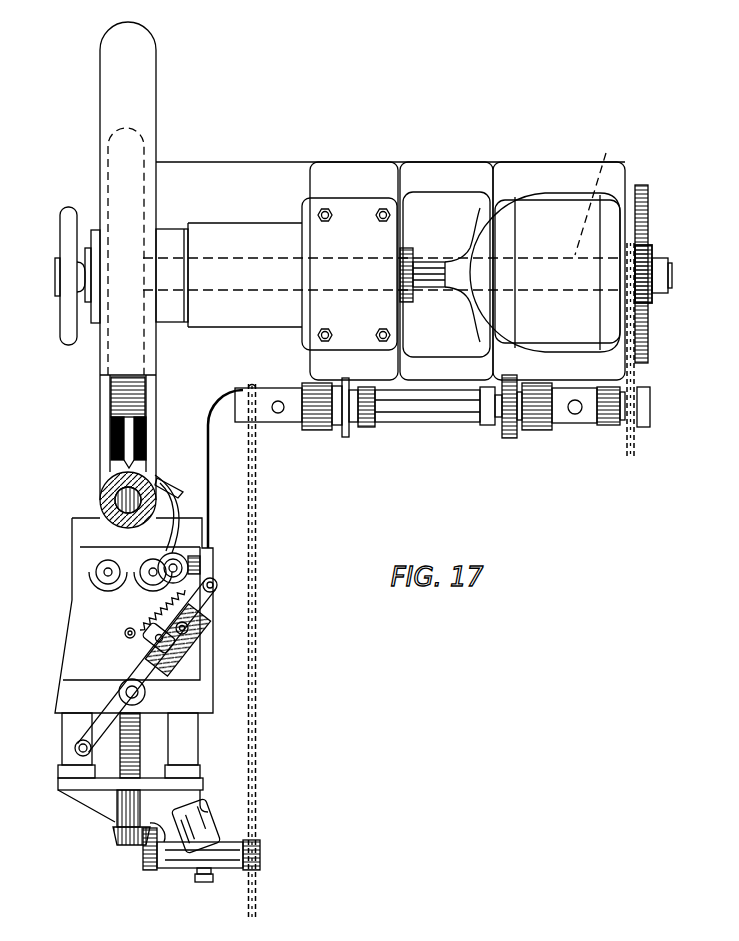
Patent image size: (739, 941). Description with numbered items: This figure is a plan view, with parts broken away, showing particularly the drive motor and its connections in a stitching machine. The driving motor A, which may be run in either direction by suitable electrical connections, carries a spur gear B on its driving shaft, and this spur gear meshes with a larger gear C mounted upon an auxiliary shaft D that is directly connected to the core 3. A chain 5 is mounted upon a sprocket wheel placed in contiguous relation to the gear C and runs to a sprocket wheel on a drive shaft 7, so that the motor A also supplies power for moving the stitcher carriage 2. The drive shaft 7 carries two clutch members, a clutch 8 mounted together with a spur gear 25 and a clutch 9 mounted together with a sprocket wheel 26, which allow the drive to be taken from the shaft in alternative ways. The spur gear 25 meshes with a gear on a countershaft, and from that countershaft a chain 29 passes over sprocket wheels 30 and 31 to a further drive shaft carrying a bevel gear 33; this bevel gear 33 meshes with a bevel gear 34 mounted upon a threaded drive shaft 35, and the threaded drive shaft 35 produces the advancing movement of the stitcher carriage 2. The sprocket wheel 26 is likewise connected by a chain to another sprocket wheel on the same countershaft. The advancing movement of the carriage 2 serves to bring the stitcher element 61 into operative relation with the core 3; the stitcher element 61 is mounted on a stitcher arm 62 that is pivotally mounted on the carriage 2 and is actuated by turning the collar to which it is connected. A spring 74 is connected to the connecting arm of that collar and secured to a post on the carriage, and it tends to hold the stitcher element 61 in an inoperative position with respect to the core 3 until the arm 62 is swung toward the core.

The stitcher carriage 2 is at (72, 636).
The core 3 is at (100, 494).
The chain 5 is at (640, 382).
The drive shaft 7 is at (422, 423).
The clutch member 8 is at (548, 430).
The clutch member 9 is at (320, 430).
The spur gear 25 is at (508, 438).
The sprocket wheel 26 is at (345, 437).
The chain 29 is at (253, 595).
The sprocket wheel 30 is at (240, 398).
The sprocket wheel 31 is at (260, 867).
The bevel gear 33 is at (150, 862).
The bevel gear 34 is at (118, 843).
The threaded drive shaft 35 is at (140, 740).
The stitcher element 61 is at (179, 490).
The stitcher arm 62 is at (178, 524).
The spring 74 is at (156, 611).
The driving motor A is at (558, 200).
The spur gear B is at (655, 258).
The gear C is at (650, 206).
The auxiliary shaft D is at (598, 193).